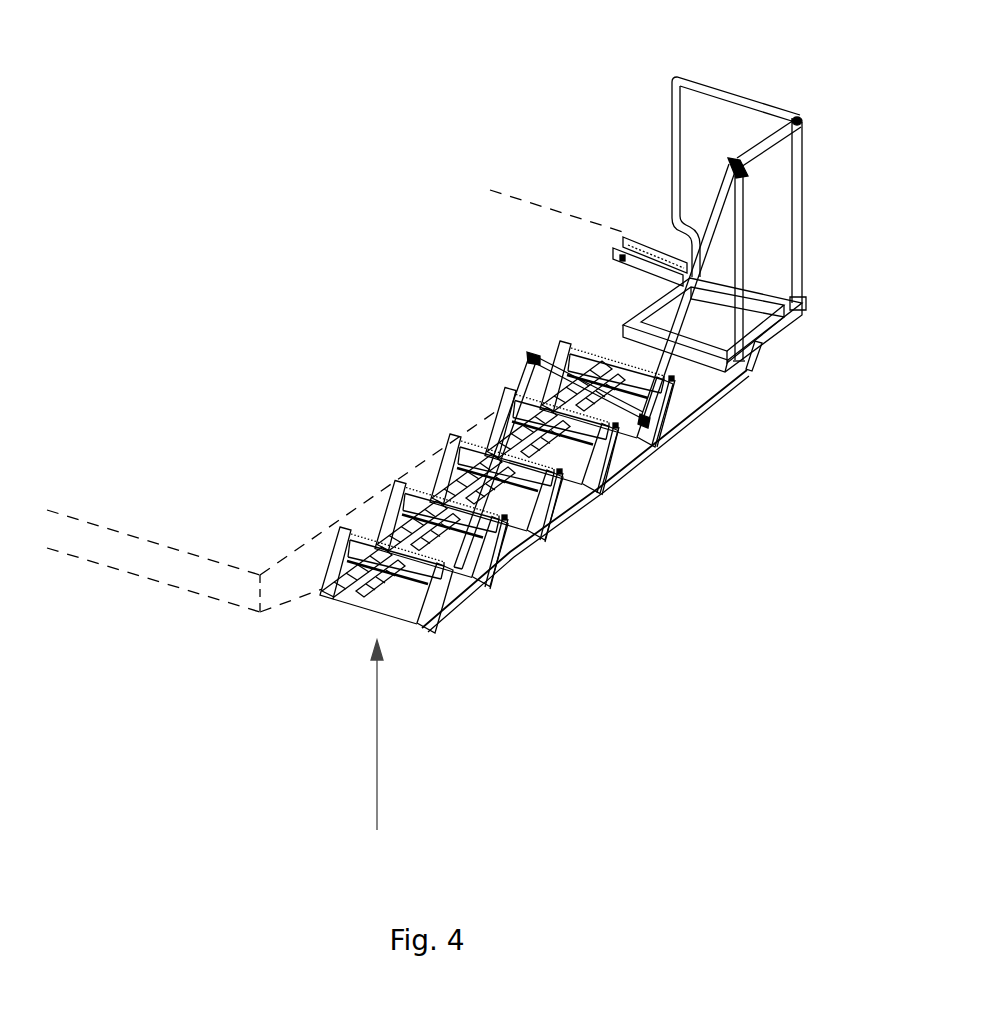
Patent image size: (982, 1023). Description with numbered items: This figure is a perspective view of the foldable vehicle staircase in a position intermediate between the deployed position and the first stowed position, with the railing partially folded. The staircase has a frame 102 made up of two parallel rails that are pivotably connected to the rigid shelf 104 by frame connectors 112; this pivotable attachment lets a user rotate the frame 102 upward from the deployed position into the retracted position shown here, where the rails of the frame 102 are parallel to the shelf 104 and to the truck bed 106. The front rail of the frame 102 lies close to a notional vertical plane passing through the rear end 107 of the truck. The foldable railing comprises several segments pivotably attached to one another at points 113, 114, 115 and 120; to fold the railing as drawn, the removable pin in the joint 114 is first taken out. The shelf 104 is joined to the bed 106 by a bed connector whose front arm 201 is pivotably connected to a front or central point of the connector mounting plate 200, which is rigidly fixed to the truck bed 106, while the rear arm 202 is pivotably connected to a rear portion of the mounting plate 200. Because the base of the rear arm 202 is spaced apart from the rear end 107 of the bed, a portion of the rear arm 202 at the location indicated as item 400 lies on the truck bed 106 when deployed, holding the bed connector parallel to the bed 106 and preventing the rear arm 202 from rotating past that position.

The frame 102 is at (567, 517).
The rigid shelf 104 is at (697, 329).
The truck bed 106 is at (294, 339).
The rear end of the truck 107 is at (297, 563).
The frame connectors 112 is at (753, 360).
The railing pivot point 113 is at (528, 356).
The railing joint 114 is at (646, 421).
The railing pivot point 115 is at (733, 158).
The railing pivot point 120 is at (795, 114).
The connector mounting plate 200 is at (620, 257).
The front arm of the bed connector 201 is at (673, 250).
The rear arm of the bed connector 202 is at (805, 294).
The portion of the rear arm lying on the truck bed 400 is at (658, 280).